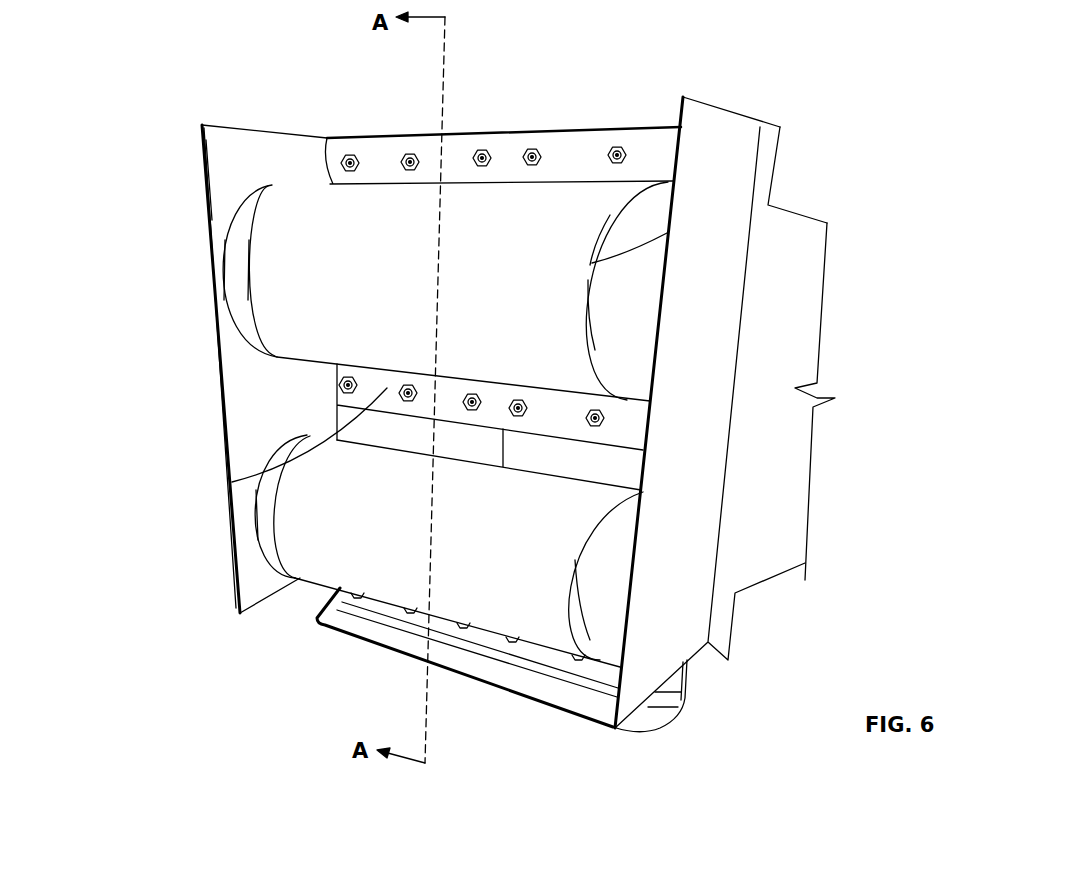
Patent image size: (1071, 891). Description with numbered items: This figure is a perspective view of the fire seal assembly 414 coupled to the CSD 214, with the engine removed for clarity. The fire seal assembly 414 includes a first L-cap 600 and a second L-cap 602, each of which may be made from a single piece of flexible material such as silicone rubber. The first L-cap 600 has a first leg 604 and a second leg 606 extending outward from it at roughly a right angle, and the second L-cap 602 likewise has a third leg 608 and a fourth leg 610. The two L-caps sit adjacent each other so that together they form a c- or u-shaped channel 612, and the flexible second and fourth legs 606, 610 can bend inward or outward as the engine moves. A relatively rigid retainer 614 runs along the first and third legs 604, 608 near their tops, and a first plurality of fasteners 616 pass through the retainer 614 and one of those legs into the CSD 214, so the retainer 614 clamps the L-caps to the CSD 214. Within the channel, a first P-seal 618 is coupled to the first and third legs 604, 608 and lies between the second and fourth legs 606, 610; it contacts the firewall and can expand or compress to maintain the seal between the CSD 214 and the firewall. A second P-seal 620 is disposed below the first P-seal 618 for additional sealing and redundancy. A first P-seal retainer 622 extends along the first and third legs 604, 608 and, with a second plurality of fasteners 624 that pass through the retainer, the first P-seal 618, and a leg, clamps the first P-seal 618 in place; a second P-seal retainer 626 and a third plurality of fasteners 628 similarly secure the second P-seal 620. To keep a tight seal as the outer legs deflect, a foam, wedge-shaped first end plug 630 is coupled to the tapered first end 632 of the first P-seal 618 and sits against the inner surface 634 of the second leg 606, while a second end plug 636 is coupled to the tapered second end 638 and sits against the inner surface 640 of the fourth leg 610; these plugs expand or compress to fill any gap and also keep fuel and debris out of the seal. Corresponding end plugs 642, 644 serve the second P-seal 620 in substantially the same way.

The CSD 214 is at (810, 260).
The fire seal assembly 414 is at (124, 68).
The first L-cap 600 is at (693, 128).
The second L-cap 602 is at (292, 155).
The first leg 604 is at (530, 477).
The second leg 606 is at (732, 155).
The third leg 608 is at (232, 482).
The fourth leg 610 is at (227, 155).
The channel 612 is at (386, 116).
The retainer 614 is at (437, 155).
The first plurality of fasteners 616 is at (522, 158).
The first P-seal 618 is at (268, 285).
The second P-seal 620 is at (310, 492).
The first P-seal retainer 622 is at (385, 434).
The second plurality of fasteners 624 is at (333, 388).
The second P-seal retainer 626 is at (380, 607).
The third plurality of fasteners 628 is at (412, 613).
The first end plug 630 is at (595, 295).
The first end 632 is at (600, 232).
The inner surface 634 is at (592, 263).
The second end plug 636 is at (230, 265).
The second end 638 is at (252, 253).
The inner surface 640 is at (220, 173).
The end plug 642 is at (588, 575).
The end plug 644 is at (270, 528).